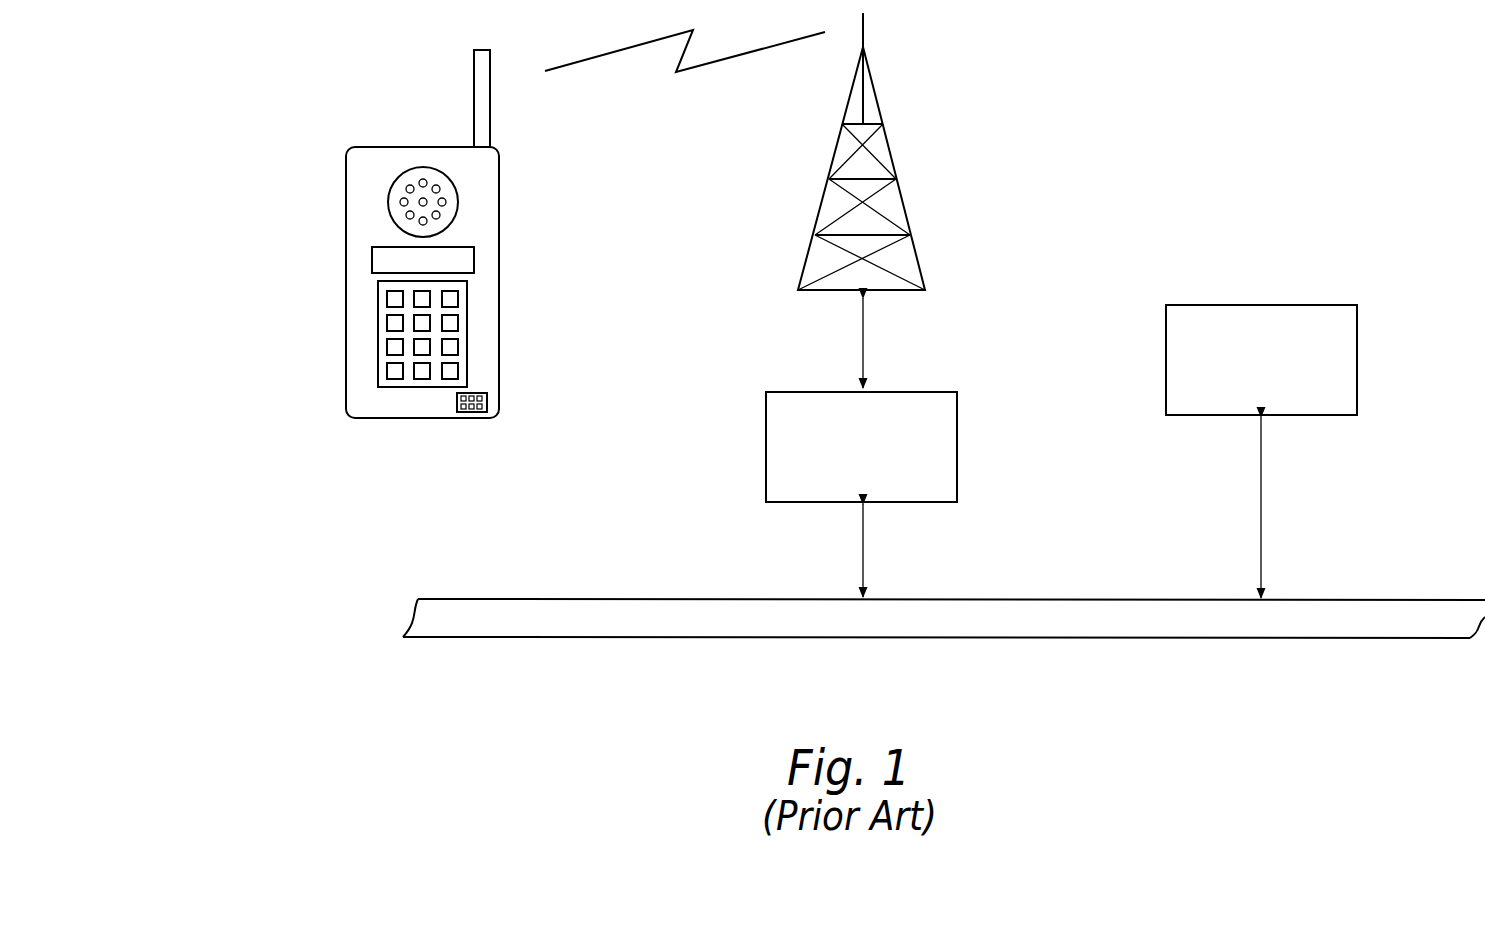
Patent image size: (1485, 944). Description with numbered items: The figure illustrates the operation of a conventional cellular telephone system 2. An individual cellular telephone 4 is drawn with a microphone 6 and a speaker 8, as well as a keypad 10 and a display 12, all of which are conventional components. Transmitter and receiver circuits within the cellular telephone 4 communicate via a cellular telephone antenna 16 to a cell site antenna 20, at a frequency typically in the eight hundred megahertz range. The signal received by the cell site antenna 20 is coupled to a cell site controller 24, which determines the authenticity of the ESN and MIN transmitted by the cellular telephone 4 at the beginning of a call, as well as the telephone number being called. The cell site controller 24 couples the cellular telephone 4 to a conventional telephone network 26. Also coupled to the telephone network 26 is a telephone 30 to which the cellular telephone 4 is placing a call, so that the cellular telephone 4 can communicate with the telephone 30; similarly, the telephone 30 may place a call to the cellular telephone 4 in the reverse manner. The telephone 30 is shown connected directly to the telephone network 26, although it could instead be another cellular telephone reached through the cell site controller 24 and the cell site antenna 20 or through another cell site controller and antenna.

The cellular telephone system 2 is at (250, 549).
The cellular telephone 4 is at (346, 398).
The microphone 6 is at (478, 413).
The speaker 8 is at (457, 208).
The keypad 10 is at (467, 329).
The display 12 is at (474, 262).
The cellular telephone antenna 16 is at (474, 108).
The cell site antenna 20 is at (880, 103).
The cell site controller 24 is at (957, 455).
The telephone network 26 is at (1017, 599).
The telephone 30 is at (1357, 358).